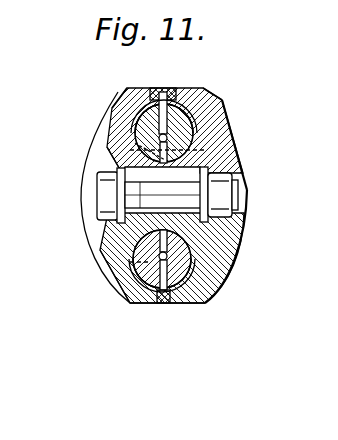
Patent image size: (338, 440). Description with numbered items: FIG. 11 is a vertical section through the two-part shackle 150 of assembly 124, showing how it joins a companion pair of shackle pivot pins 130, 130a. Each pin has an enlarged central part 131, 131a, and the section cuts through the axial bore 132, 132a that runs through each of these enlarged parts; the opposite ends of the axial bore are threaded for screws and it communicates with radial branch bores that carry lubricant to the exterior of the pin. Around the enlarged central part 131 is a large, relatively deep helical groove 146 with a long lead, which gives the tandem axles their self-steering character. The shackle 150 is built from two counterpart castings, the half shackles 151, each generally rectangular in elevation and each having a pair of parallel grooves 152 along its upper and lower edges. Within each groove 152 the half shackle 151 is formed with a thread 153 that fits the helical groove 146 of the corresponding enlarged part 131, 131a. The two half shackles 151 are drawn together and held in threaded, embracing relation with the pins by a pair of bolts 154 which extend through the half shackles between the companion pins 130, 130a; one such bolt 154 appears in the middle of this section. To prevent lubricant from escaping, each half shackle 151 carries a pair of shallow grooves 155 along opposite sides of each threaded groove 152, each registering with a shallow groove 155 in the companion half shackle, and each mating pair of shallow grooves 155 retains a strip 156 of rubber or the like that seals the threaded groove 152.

The assembly 124 is at (325, 7).
The shackle pivot pin 130 is at (125, 275).
The shackle pivot pin 130a is at (128, 115).
The enlarged central part 131 is at (222, 252).
The enlarged central part 131a is at (222, 122).
The axial bore 132 is at (200, 293).
The axial bore 132a is at (200, 97).
The helical groove 146 is at (135, 143).
The shackle 150 is at (92, 152).
The half shackle casting 151 is at (218, 147).
The parallel groove 152 is at (217, 105).
The thread 153 is at (205, 150).
The bolt 154 is at (98, 202).
The shallow groove 155 is at (151, 92).
The rubber strip 156 is at (162, 95).